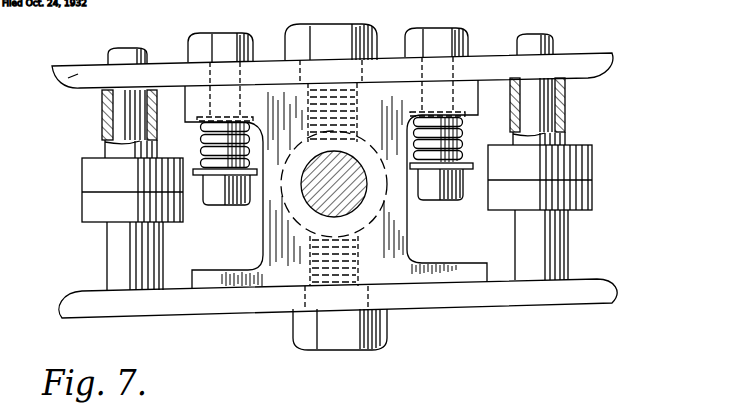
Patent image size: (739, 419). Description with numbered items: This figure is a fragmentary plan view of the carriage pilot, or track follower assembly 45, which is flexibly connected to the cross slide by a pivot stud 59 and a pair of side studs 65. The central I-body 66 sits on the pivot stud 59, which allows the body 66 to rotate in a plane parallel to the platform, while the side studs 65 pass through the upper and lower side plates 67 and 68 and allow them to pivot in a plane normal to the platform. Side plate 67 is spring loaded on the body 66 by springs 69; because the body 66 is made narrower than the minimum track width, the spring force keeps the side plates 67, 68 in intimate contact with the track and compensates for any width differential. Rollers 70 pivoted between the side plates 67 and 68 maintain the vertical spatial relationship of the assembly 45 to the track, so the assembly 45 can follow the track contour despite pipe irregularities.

The track follower assembly 45 is at (512, 317).
The pivot stud 59 is at (352, 198).
The side studs 65 is at (296, 37).
The I-body 66 is at (284, 228).
The side plate 67 is at (74, 76).
The side plate 68 is at (470, 295).
The springs 69 is at (204, 127).
The rollers 70 is at (96, 205).